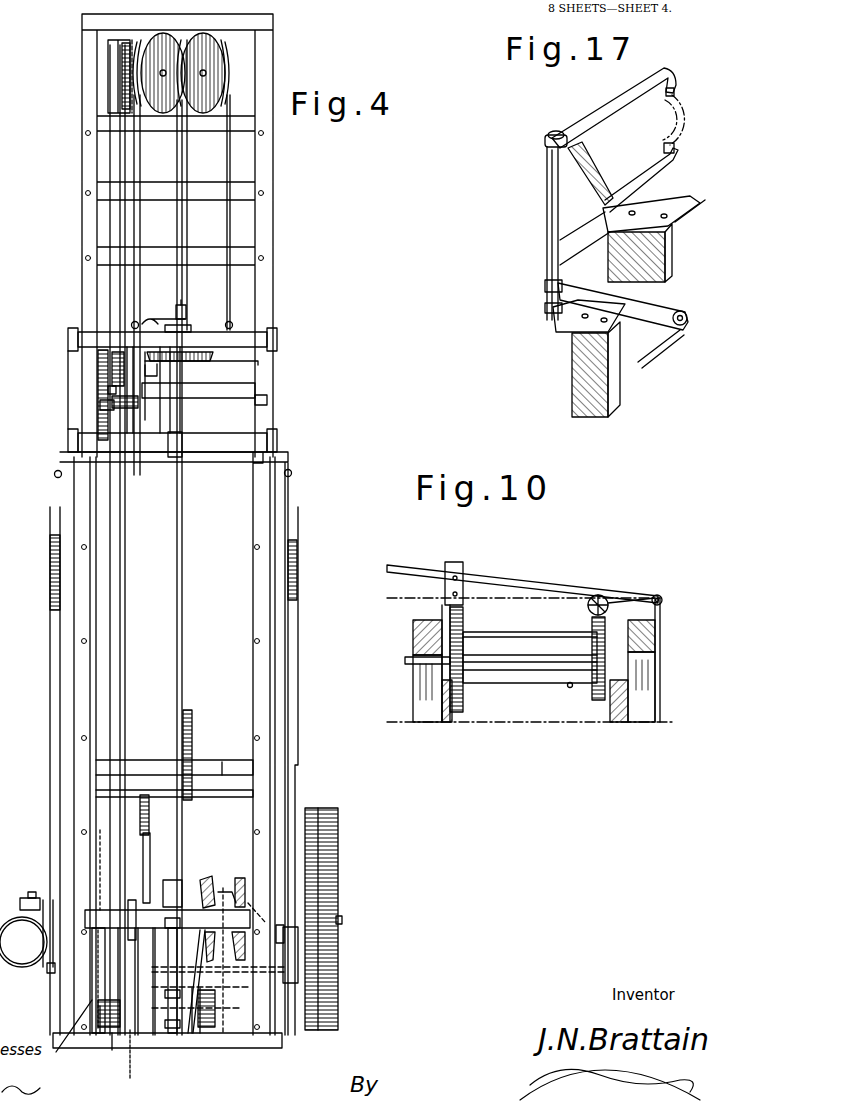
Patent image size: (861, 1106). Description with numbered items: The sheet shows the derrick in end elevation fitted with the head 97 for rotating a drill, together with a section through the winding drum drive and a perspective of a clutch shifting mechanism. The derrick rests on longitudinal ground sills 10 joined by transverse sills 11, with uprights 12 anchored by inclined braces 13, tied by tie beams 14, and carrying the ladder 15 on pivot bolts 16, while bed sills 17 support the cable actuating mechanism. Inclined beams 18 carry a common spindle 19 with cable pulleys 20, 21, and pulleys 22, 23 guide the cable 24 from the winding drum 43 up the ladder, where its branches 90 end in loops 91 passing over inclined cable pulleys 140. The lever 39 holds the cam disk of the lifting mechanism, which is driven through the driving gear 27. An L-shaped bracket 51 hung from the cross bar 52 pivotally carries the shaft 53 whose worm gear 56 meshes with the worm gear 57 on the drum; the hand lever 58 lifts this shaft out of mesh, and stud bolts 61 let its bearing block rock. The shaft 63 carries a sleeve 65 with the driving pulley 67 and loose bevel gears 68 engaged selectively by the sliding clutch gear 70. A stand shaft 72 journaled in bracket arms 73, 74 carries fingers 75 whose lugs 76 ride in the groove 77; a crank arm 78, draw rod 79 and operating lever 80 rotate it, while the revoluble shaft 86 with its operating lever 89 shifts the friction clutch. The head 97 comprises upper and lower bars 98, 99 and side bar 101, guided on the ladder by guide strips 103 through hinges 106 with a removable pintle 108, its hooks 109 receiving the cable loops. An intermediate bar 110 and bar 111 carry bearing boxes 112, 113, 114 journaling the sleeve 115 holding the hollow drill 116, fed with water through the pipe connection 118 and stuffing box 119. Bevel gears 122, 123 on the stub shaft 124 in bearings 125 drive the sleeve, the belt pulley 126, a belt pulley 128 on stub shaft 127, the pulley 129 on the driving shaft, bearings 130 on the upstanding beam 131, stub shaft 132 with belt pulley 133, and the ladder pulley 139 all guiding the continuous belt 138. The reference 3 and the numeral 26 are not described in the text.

In FIG. 4, the wheel 3 is at (4, 961).
In FIG. 17, the longitudinal ground sills 10 is at (572, 392).
In FIG. 10, the longitudinal ground sills 10 is at (622, 722).
In FIG. 4, the transverse sills 11 is at (290, 1060).
In FIG. 17, the transverse sills 11 is at (608, 265).
In FIG. 4, the uprights 12 is at (285, 692).
In FIG. 4, the inclined braces 13 is at (292, 726).
In FIG. 10, the inclined braces 13 is at (650, 705).
In FIG. 4, the tie beams 14 is at (90, 915).
In FIG. 10, the tie beams 14 is at (405, 660).
In FIG. 4, the ladder 15 is at (82, 122).
In FIG. 10, the ladder 15 is at (658, 672).
In FIG. 4, the pivot bolts 16 is at (292, 472).
In FIG. 4, the bed sills 17 is at (48, 975).
In FIG. 10, the bed sills 17 is at (625, 640).
In FIG. 4, the inclined beams 18 is at (225, 1040).
In FIG. 4, the spindle 19 is at (155, 1040).
In FIG. 10, the spindle 19 is at (463, 625).
In FIG. 4, the cable pulley 20 is at (175, 1040).
In FIG. 4, the cable pulley 21 is at (222, 1040).
In FIG. 4, the cable pulley 22 is at (168, 960).
In FIG. 4, the cable pulley 23 is at (180, 1035).
In FIG. 10, the cable 24 is at (570, 688).
In FIG. 4, the shaft 26 is at (300, 930).
In FIG. 4, the driving gear 27 is at (96, 1040).
In FIG. 4, the lever 39 is at (192, 725).
In FIG. 4, the winding drum 43 is at (134, 912).
In FIG. 10, the winding drum 43 is at (520, 683).
In FIG. 4, the L-shaped bracket 51 is at (140, 812).
In FIG. 4, the cross bar 52 is at (150, 762).
In FIG. 10, the shaft 53 is at (608, 600).
In FIG. 10, the worm gear 56 is at (598, 595).
In FIG. 10, the worm gear 57 is at (598, 700).
In FIG. 10, the hand lever 58 is at (525, 590).
In FIG. 4, the stud bolts 61 is at (208, 880).
In FIG. 4, the shaft 63 is at (42, 900).
In FIG. 4, the sleeve 65 is at (342, 921).
In FIG. 4, the driving pulley 67 is at (338, 853).
In FIG. 4, the bevel gears 68 is at (249, 919).
In FIG. 17, the clutch gear 70 is at (650, 125).
In FIG. 4, the stand shaft 72 is at (224, 885).
In FIG. 17, the stand shaft 72 is at (547, 200).
In FIG. 4, the bracket arm 73 is at (242, 880).
In FIG. 17, the bracket arm 73 is at (546, 145).
In FIG. 4, the bracket arm 74 is at (215, 1010).
In FIG. 17, the bracket arm 74 is at (572, 318).
In FIG. 17, the fingers 75 is at (624, 182).
In FIG. 17, the lugs 76 is at (678, 148).
In FIG. 17, the groove 77 is at (665, 118).
In FIG. 4, the crank arm 78 is at (218, 996).
In FIG. 17, the crank arm 78 is at (690, 310).
In FIG. 4, the draw rod 79 is at (320, 960).
In FIG. 17, the draw rod 79 is at (656, 350).
In FIG. 4, the operating lever 80 is at (302, 800).
In FIG. 4, the revoluble shaft 86 is at (140, 918).
In FIG. 4, the operating lever 89 is at (143, 840).
In FIG. 4, the cable branches 90 is at (227, 160).
In FIG. 4, the loops 91 is at (238, 322).
In FIG. 4, the head 97 is at (268, 372).
In FIG. 4, the upper bar 98 is at (265, 330).
In FIG. 4, the lower bar 99 is at (232, 455).
In FIG. 4, the side bar 101 is at (267, 425).
In FIG. 4, the guide strips 103 is at (288, 497).
In FIG. 4, the hinge 106 is at (68, 440).
In FIG. 4, the pintle 108 is at (272, 400).
In FIG. 4, the hooks 109 is at (50, 540).
In FIG. 4, the intermediate bar 110 is at (260, 388).
In FIG. 4, the bar 111 is at (150, 452).
In FIG. 4, the drill receiving bearing box 112 is at (170, 470).
In FIG. 4, the bearing box 113 is at (195, 322).
In FIG. 4, the bearing box 114 is at (190, 390).
In FIG. 4, the sleeve 115 is at (190, 372).
In FIG. 4, the rotary hard rock drill 116 is at (182, 580).
In FIG. 4, the pipe connection 118 is at (163, 312).
In FIG. 4, the stuffing box 119 is at (188, 310).
In FIG. 4, the bevel gear 122 is at (210, 360).
In FIG. 4, the bevel gear 123 is at (162, 385).
In FIG. 4, the stub shaft 124 is at (98, 362).
In FIG. 4, the bearings 125 is at (112, 370).
In FIG. 4, the belt pulley 126 is at (108, 390).
In FIG. 4, the stub shaft 127 is at (68, 440).
In FIG. 4, the belt pulley 128 is at (112, 404).
In FIG. 4, the belt pulley 129 is at (100, 835).
In FIG. 4, the bearings 130 is at (134, 1059).
In FIG. 4, the upstanding beam 131 is at (125, 1040).
In FIG. 4, the stub shaft 132 is at (71, 1034).
In FIG. 4, the belt pulley 133 is at (92, 990).
In FIG. 4, the continuous belt 138 is at (120, 596).
In FIG. 4, the belt pulley 139 is at (130, 78).
In FIG. 4, the cable pulleys 140 is at (130, 92).